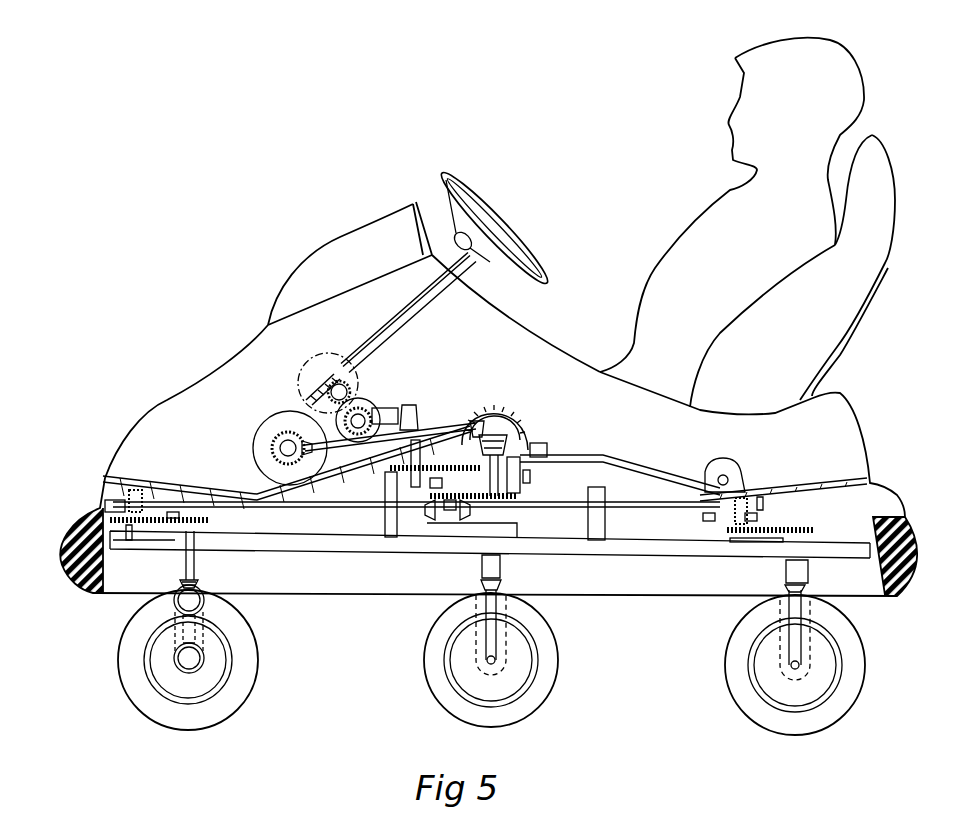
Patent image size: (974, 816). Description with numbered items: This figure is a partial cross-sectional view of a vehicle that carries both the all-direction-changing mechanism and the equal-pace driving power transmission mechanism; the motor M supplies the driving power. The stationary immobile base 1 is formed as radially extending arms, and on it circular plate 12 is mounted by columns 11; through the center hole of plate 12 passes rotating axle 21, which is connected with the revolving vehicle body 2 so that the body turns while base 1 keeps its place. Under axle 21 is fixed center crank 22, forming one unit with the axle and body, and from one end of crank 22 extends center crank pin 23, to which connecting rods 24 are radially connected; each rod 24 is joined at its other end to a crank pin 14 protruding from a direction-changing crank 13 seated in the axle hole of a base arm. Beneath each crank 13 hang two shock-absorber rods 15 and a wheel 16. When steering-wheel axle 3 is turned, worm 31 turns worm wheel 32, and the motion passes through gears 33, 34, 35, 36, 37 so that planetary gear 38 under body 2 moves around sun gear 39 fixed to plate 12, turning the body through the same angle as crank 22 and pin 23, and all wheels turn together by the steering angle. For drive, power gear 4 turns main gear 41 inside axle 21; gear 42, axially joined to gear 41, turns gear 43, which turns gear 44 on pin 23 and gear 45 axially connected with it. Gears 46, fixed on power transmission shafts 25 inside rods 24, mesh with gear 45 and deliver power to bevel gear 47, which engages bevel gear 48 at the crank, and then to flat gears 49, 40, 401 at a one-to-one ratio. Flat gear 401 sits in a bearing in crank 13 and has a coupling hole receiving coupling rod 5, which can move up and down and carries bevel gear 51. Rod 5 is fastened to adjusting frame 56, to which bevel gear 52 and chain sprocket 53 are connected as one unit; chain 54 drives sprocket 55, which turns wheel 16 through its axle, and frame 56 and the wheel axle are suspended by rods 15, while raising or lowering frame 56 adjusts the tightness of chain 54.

The immobile base 1 is at (733, 557).
The revolving vehicle body 2 is at (257, 497).
The steering-wheel axle 3 is at (398, 310).
The power gear 4 is at (483, 430).
The coupling rod 5 is at (203, 572).
The columns 11 is at (653, 503).
The circular plate 12 is at (587, 473).
The direction-changing crank 13 is at (113, 537).
The crank pin 14 is at (113, 497).
The shock-absorber rods 15 is at (493, 603).
The wheel 16 is at (212, 713).
The rotating axle 21 is at (530, 440).
The center crank 22 is at (517, 490).
The center crank pin 23 is at (473, 420).
The connecting rods 24 is at (707, 518).
The power transmission shaft 25 is at (705, 500).
The worm 31 is at (322, 363).
The worm wheel 32 is at (348, 375).
The gear 33 is at (297, 388).
The gear 34 is at (370, 400).
The gear 35 is at (374, 408).
The gear 36 is at (412, 408).
The gear 37 is at (477, 420).
The planetary gear 38 is at (382, 477).
The sun gear 39 is at (403, 505).
The flat gear 40 is at (763, 528).
The flat gear 401 is at (807, 530).
The main gear 41 is at (520, 408).
The gear 42 is at (540, 446).
The gear 43 is at (453, 517).
The gear 44 is at (443, 463).
The gear 45 is at (423, 487).
The gears 46 is at (430, 483).
The bevel gear 47 is at (738, 497).
The bevel gear 48 is at (742, 517).
The flat gear 49 is at (130, 527).
The bevel gear 51 is at (205, 592).
The bevel gear 52 is at (208, 610).
The chain sprocket 53 is at (277, 646).
The chain 54 is at (213, 637).
The sprocket 55 is at (205, 667).
The adjusting frame 56 is at (490, 637).
The motor M is at (290, 448).